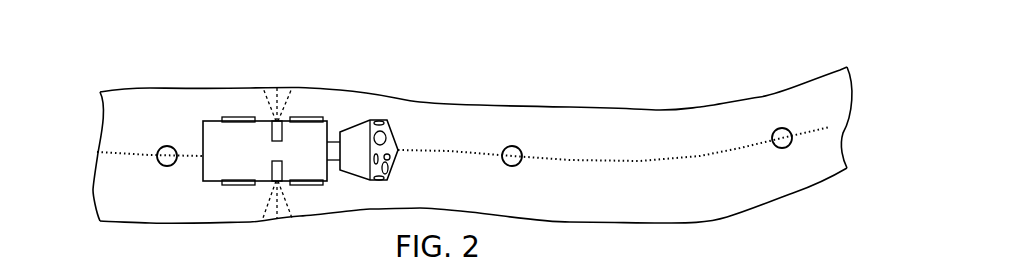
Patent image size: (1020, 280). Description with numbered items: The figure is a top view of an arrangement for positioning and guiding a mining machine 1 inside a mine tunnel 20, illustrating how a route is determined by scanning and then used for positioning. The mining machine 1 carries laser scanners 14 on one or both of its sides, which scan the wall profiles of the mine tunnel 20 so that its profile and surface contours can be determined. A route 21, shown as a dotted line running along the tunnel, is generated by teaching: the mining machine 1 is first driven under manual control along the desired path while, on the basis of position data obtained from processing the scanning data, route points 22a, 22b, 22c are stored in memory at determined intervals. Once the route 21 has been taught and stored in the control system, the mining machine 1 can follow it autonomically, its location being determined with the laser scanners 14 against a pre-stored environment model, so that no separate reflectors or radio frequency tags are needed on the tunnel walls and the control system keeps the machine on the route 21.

The mine tunnel 20 is at (150, 90).
The route 21 is at (105, 152).
The mining machine 1 is at (218, 138).
The laser scanner 14 is at (273, 128).
The route point 22a is at (160, 166).
The route point 22b is at (505, 163).
The route point 22c is at (773, 147).